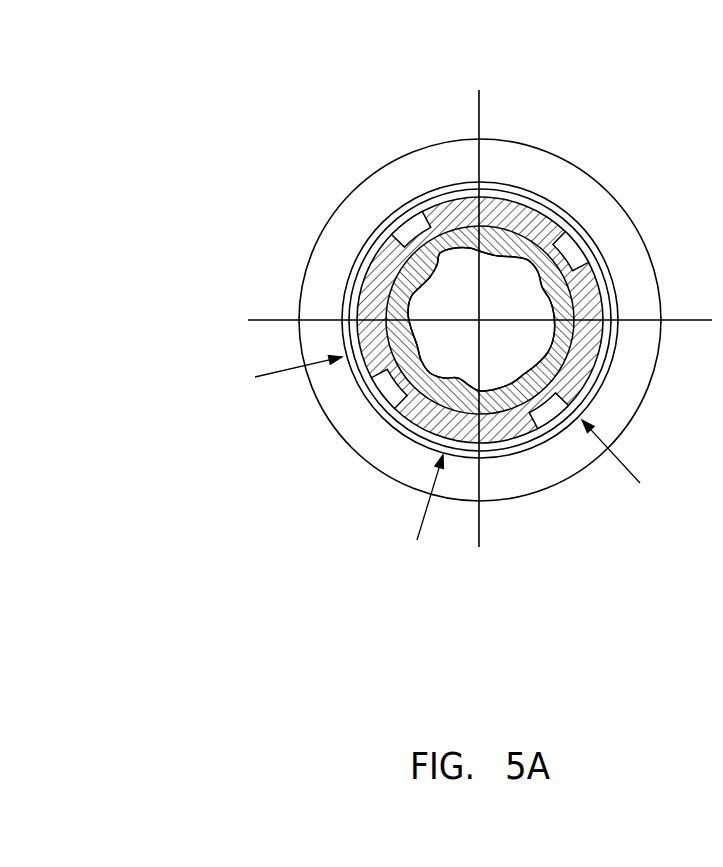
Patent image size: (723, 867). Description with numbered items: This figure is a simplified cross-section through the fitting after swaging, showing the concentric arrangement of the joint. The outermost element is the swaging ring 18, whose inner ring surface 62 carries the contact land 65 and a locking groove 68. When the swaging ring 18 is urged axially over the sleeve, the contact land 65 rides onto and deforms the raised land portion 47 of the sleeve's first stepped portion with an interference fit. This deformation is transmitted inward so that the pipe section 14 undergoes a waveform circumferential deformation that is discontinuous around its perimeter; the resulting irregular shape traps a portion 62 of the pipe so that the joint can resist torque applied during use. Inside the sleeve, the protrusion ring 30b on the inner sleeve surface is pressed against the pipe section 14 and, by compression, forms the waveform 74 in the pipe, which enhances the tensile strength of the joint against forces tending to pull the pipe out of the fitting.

The pipe section 14 is at (603, 262).
The swaging ring 18 is at (583, 178).
The protrusion ring 30b is at (403, 215).
The raised land portion 47 is at (505, 207).
The inner ring surface 62 is at (375, 271).
The contact land 65 is at (387, 227).
The locking groove 68 is at (452, 184).
The waveform 74 is at (496, 258).